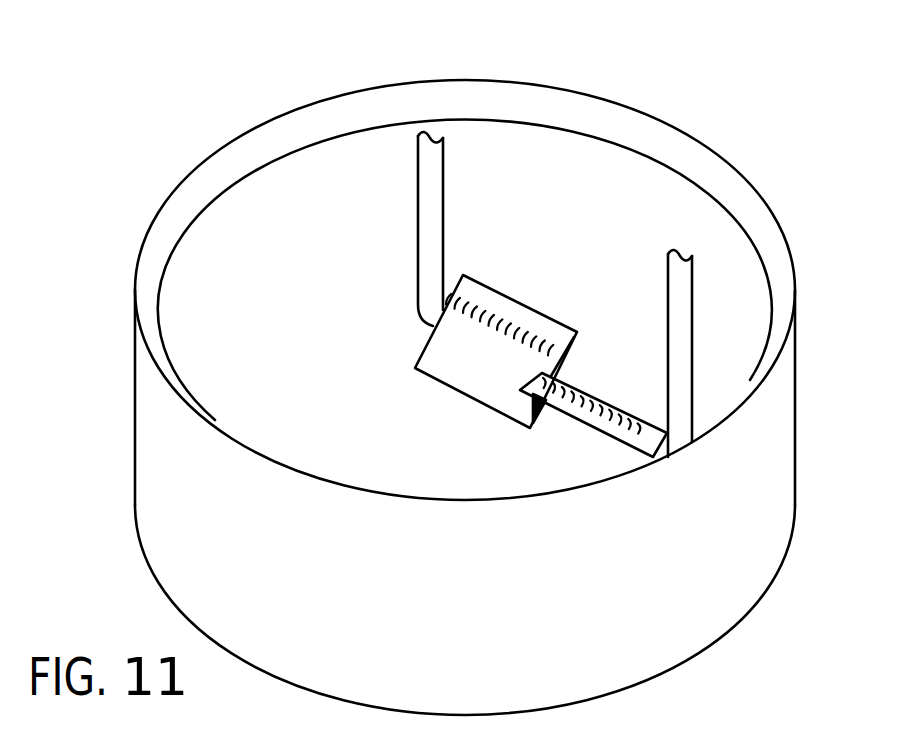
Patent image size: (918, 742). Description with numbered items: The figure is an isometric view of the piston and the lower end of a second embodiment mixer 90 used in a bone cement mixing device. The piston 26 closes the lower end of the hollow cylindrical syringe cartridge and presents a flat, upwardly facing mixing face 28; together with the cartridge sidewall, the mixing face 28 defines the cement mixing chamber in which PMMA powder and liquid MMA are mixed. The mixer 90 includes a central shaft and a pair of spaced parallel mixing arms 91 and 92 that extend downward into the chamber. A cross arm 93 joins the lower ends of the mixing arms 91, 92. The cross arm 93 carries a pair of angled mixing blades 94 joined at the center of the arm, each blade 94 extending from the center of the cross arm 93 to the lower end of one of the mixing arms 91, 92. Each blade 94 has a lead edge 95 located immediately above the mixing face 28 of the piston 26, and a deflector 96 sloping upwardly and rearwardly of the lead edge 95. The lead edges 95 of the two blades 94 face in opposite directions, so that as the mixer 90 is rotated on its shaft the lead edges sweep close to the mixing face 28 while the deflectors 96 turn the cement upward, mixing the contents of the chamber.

The piston 26 is at (802, 436).
The mixing face 28 is at (274, 307).
The mixer 90 is at (408, 239).
The mixing arm 91 is at (444, 182).
The mixing arm 92 is at (666, 288).
The cross arm 93 is at (495, 363).
The mixing blade 94 is at (478, 293).
The lead edge 95 is at (468, 395).
The deflector 96 is at (443, 358).